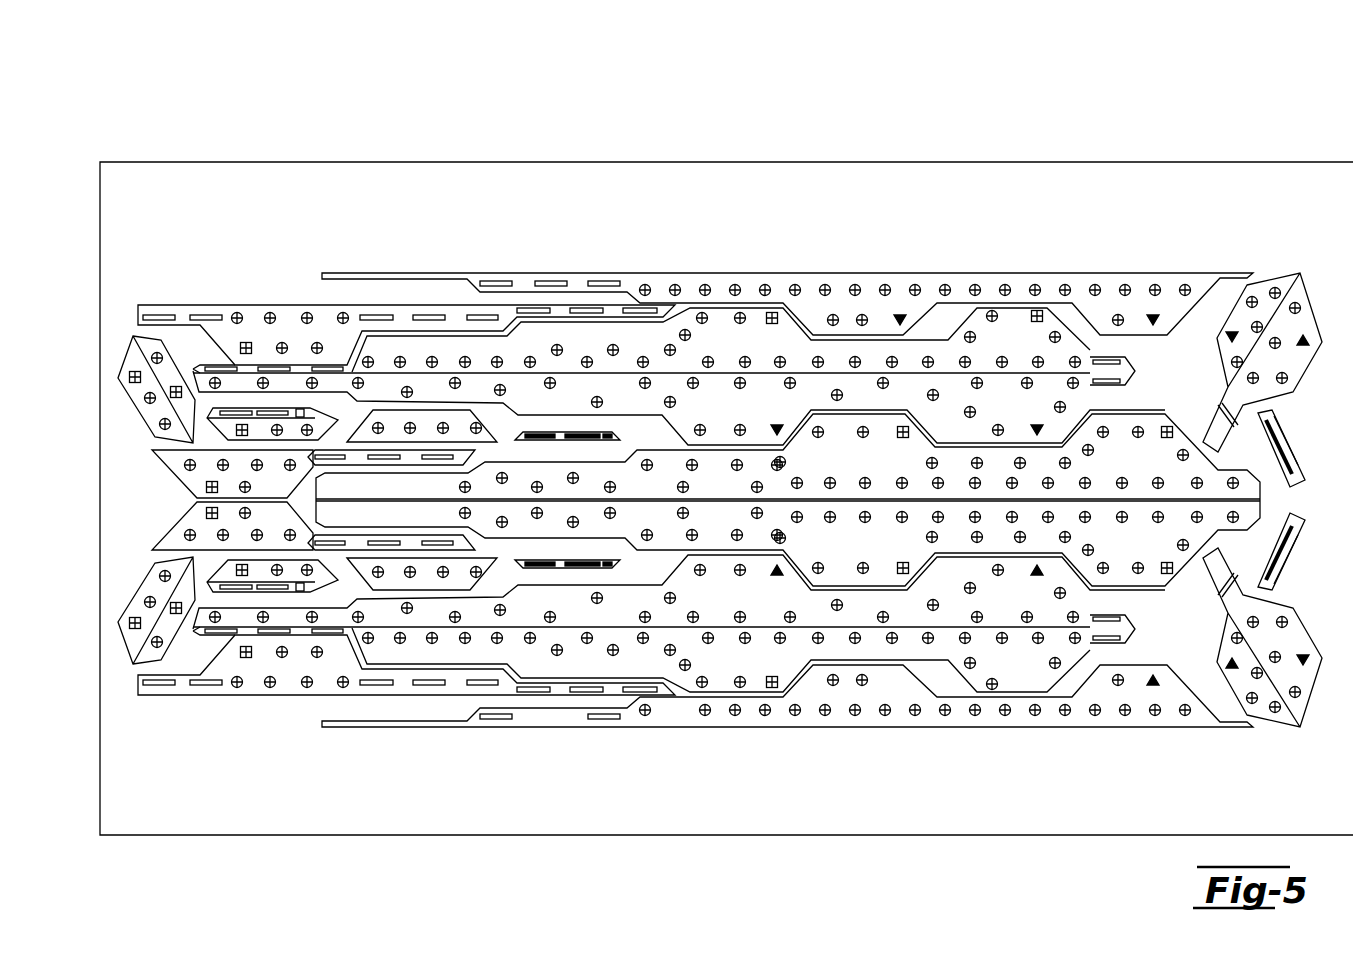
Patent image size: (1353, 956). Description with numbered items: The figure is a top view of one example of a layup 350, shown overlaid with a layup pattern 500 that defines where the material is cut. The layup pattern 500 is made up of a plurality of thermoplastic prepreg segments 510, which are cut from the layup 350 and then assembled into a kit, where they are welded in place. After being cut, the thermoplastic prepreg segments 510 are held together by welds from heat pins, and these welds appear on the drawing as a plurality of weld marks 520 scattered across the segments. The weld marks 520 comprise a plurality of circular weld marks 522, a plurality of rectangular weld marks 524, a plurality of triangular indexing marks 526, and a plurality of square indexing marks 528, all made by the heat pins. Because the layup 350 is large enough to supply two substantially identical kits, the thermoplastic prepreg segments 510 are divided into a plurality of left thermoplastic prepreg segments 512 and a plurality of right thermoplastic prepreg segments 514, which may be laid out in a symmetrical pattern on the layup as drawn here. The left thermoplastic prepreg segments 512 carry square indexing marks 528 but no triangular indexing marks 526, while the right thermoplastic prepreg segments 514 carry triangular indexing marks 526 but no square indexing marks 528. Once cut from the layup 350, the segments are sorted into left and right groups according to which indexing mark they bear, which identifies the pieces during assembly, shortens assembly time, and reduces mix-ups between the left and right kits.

The layup 350 is at (185, 121).
The layup pattern 500 is at (357, 217).
The thermoplastic prepreg segments 510 is at (432, 270).
The left thermoplastic prepreg segments 512 is at (1168, 412).
The right thermoplastic prepreg segments 514 is at (1168, 588).
The weld marks 520 is at (751, 264).
The circular weld marks 522 is at (671, 284).
The rectangular weld marks 524 is at (548, 280).
The triangular indexing marks 526 is at (899, 315).
The square indexing marks 528 is at (1041, 310).